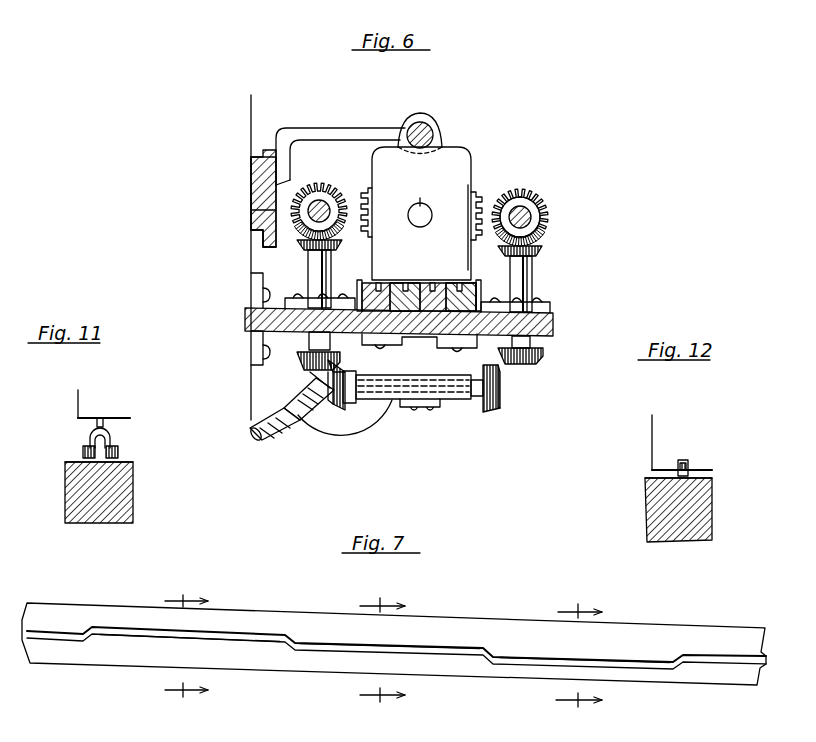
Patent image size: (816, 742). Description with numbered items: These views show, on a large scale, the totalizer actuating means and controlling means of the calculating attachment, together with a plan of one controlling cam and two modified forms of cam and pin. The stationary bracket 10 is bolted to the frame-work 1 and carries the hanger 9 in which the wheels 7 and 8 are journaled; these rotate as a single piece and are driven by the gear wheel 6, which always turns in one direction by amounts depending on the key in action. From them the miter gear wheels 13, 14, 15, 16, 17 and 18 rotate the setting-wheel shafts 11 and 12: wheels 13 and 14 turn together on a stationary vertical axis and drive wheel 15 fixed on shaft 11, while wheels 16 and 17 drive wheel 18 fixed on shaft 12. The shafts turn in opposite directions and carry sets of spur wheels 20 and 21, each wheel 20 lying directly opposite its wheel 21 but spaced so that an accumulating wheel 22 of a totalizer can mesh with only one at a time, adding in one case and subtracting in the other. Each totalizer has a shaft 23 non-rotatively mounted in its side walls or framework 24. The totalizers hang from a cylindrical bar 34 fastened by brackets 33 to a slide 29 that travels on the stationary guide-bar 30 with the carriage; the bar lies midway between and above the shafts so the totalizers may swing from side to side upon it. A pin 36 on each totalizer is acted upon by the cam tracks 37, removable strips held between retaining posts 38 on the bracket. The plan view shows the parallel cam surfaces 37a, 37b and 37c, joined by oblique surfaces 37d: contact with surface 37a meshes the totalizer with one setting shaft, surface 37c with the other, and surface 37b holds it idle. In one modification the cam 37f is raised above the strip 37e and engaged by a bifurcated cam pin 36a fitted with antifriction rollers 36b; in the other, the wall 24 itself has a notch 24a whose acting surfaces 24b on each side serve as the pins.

In FIG. 6, the frame-work 1 is at (246, 392).
In FIG. 6, the gear wheel 6 is at (318, 404).
In FIG. 6, the wheel 7 is at (348, 402).
In FIG. 6, the wheel 8 is at (500, 398).
In FIG. 7, the wheel 8 is at (186, 645).
In FIG. 6, the hanger 9 is at (418, 402).
In FIG. 7, the hanger 9 is at (382, 649).
In FIG. 6, the stationary bracket 10 is at (553, 329).
In FIG. 7, the stationary bracket 10 is at (579, 653).
In FIG. 6, the setting-wheel shaft 11 is at (528, 214).
In FIG. 6, the setting-wheel shaft 12 is at (320, 210).
In FIG. 6, the miter gear wheel 13 is at (538, 362).
In FIG. 6, the miter gear wheel 14 is at (540, 249).
In FIG. 6, the miter gear wheel 15 is at (300, 364).
In FIG. 6, the miter gear wheel 16 is at (305, 250).
In FIG. 6, the miter gear wheel 17 is at (542, 220).
In FIG. 6, the miter gear wheel 18 is at (252, 216).
In FIG. 6, the spur wheels 20 is at (532, 198).
In FIG. 6, the spur wheels 21 is at (260, 196).
In FIG. 6, the accumulating wheels 22 is at (362, 190).
In FIG. 6, the shaft 23 is at (421, 216).
In FIG. 6, the totalizer framework 24 is at (448, 166).
In FIG. 11, the totalizer framework 24 is at (78, 405).
In FIG. 12, the totalizer framework 24 is at (654, 445).
In FIG. 12, the notch 24a is at (683, 460).
In FIG. 12, the acting surfaces 24b is at (706, 456).
In FIG. 6, the slide 29 is at (263, 247).
In FIG. 6, the stationary guide-bar 30 is at (252, 168).
In FIG. 6, the brackets 33 is at (338, 130).
In FIG. 6, the bar 34 is at (428, 128).
In FIG. 6, the pin 36 is at (389, 292).
In FIG. 11, the cam pin 36a is at (93, 431).
In FIG. 11, the antifriction rollers 36b is at (83, 453).
In FIG. 6, the cam tracks 37 is at (452, 300).
In FIG. 7, the cam tracks 37 is at (480, 625).
In FIG. 7, the cam surface 37a is at (232, 637).
In FIG. 6, the cam surface 37b is at (398, 318).
In FIG. 7, the cam surface 37b is at (405, 645).
In FIG. 7, the cam surface 37c is at (638, 658).
In FIG. 7, the oblique surfaces 37d is at (88, 630).
In FIG. 11, the cam strip 37e is at (74, 501).
In FIG. 12, the cam strip 37e is at (652, 499).
In FIG. 11, the cam 37f is at (68, 463).
In FIG. 12, the cam 37f is at (688, 476).
In FIG. 6, the retaining walls or posts 38 is at (357, 295).